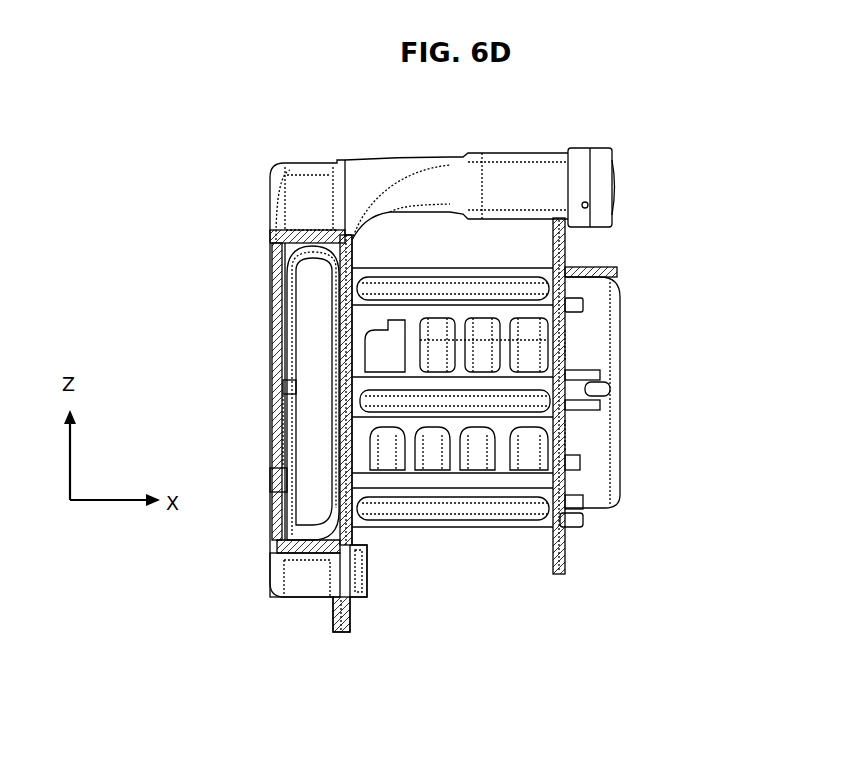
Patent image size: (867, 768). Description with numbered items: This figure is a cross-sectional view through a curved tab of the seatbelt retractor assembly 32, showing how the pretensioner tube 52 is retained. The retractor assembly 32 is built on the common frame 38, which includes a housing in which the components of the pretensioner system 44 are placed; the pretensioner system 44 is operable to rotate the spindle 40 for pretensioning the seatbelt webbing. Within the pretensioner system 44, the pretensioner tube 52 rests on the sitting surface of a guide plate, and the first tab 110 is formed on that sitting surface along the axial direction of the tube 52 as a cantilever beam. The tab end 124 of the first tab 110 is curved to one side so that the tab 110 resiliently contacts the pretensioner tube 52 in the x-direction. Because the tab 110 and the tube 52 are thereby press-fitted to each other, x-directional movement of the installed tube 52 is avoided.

The retractor assembly 32 is at (653, 125).
The common frame 38 is at (560, 553).
The spindle 40 is at (517, 357).
The pretensioner system 44 is at (250, 635).
The pretensioner tube 52 is at (292, 252).
The first tab 110 is at (283, 352).
The tab end 124 is at (283, 390).